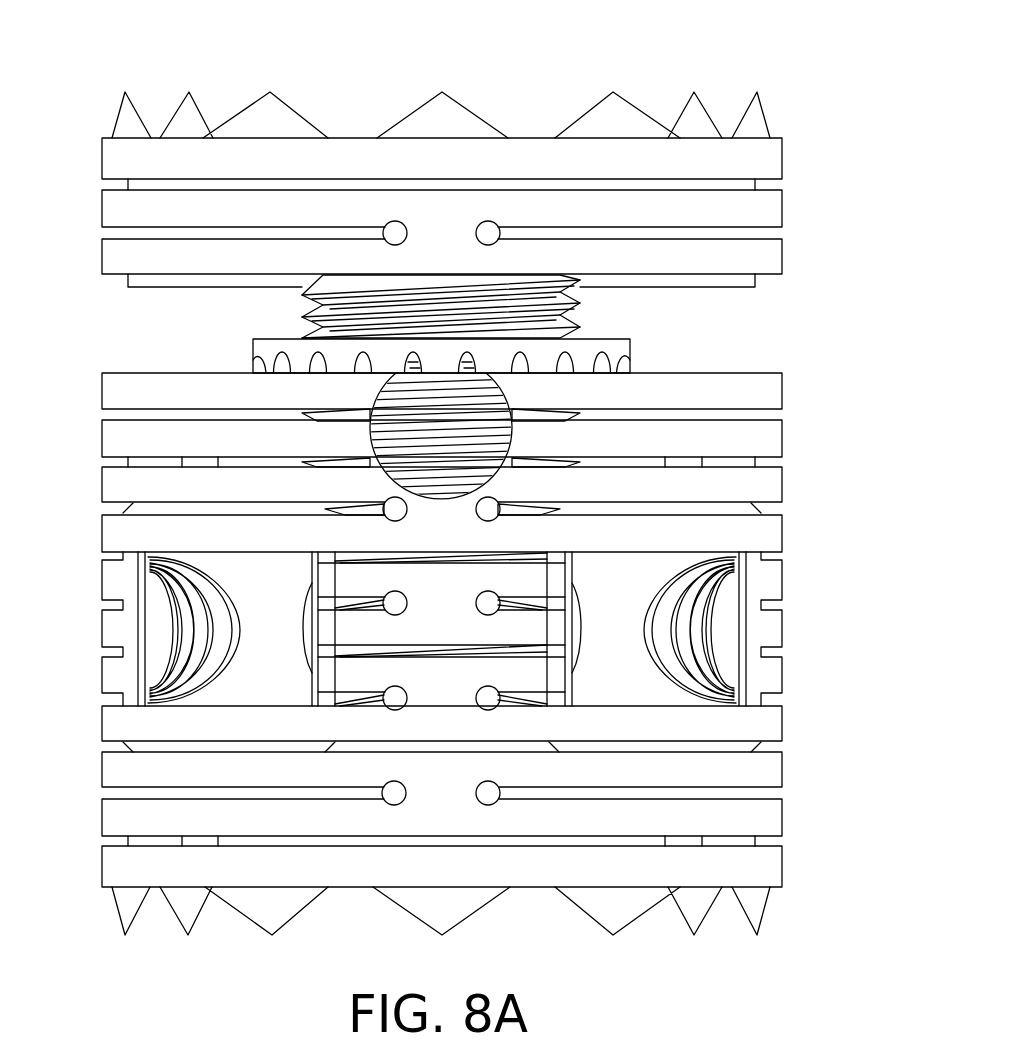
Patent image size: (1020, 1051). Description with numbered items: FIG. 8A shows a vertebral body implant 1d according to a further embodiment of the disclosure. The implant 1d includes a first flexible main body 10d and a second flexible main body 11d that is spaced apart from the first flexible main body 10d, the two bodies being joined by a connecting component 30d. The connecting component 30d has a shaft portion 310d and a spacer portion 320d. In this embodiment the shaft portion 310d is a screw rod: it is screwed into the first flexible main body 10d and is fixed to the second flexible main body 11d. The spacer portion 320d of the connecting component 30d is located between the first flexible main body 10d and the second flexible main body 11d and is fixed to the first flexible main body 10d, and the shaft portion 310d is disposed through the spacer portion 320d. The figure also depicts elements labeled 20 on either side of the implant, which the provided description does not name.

The vertebral body implant 1d is at (51, 34).
The second flexible main body 11d is at (808, 157).
The first flexible main body 10d is at (808, 870).
The connecting component 30d is at (588, 324).
The shaft portion 310d is at (606, 316).
The spacer portion 320d is at (656, 360).
The nut 20 is at (127, 567).